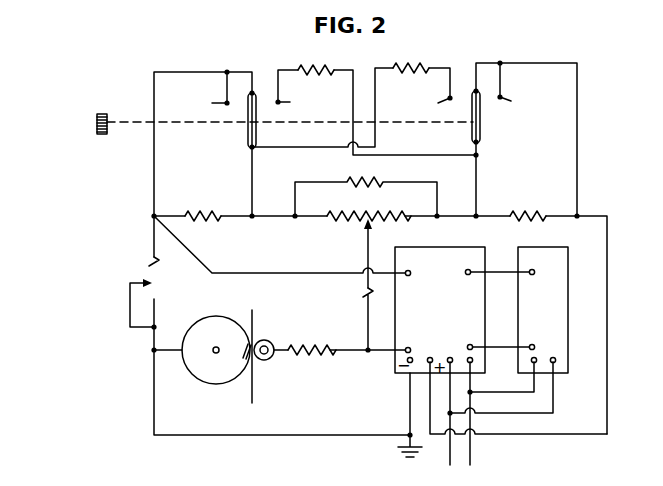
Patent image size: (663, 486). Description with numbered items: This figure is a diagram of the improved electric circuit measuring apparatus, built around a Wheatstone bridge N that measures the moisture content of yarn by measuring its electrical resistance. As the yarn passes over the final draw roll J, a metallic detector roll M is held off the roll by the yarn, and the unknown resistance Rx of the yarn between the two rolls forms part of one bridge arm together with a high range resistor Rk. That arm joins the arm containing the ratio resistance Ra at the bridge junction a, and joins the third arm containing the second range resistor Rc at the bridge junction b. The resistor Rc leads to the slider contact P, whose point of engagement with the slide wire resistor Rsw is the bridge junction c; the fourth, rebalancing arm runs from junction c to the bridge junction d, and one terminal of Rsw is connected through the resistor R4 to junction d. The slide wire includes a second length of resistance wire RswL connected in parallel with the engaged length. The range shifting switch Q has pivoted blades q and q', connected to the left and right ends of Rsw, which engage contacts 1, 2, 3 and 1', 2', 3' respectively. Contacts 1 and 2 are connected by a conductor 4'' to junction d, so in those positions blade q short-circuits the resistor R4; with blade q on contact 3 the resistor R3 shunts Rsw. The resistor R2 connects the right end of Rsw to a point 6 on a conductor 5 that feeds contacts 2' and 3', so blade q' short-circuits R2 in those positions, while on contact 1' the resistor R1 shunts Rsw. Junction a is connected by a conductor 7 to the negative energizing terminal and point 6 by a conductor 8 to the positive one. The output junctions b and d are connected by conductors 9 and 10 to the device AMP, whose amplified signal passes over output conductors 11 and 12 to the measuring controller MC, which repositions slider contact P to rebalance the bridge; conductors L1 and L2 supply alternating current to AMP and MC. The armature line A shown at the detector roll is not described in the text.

The switch contact 1 is at (214, 103).
The switch contact 1' is at (438, 105).
The switch contact 2 is at (262, 85).
The switch contact 2' is at (464, 81).
The switch contact 3 is at (289, 102).
The switch contact 3' is at (515, 105).
The conductor 4'' is at (203, 61).
The conductor 5 is at (535, 63).
The point 6 is at (577, 216).
The conductor 7 is at (311, 435).
The conductor 8 is at (550, 433).
The conductor 9 is at (404, 352).
The conductor 10 is at (392, 273).
The output conductor 11 is at (496, 272).
The output conductor 12 is at (494, 347).
The switch blade q is at (241, 120).
The switch blade q' is at (488, 117).
The range shifting switch Q is at (218, 147).
The Wheatstone bridge N is at (100, 198).
The bridge junction d is at (154, 216).
The bridge junction a is at (154, 351).
The bridge junction b is at (368, 351).
The bridge junction c is at (370, 224).
The slider contact P is at (365, 226).
The fixed resistor R1 is at (418, 70).
The fixed resistor R2 is at (532, 216).
The fixed resistor R3 is at (310, 72).
The fixed resistor R4 is at (218, 216).
The slide wire resistor Rsw is at (290, 230).
The second length of resistance wire RswL is at (350, 182).
The ratio resistance Ra is at (160, 288).
The second range resistor Rc is at (364, 305).
The range resistor Rk is at (332, 345).
The unknown resistance Rx is at (247, 352).
The final draw roll J is at (192, 332).
The armature A is at (252, 325).
The detector roll M is at (267, 341).
The amplifier device AMP is at (461, 318).
The measuring controller MC is at (559, 318).
The conductor L1 is at (470, 455).
The conductor L2 is at (450, 465).